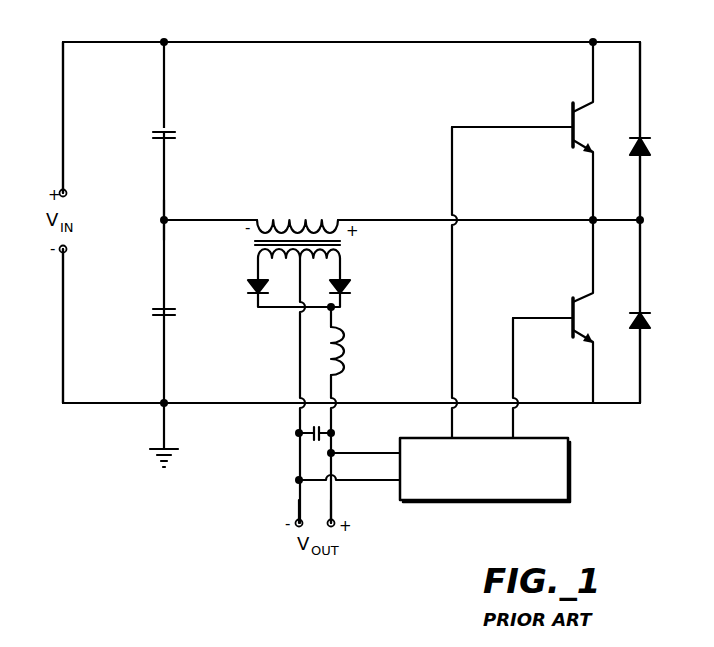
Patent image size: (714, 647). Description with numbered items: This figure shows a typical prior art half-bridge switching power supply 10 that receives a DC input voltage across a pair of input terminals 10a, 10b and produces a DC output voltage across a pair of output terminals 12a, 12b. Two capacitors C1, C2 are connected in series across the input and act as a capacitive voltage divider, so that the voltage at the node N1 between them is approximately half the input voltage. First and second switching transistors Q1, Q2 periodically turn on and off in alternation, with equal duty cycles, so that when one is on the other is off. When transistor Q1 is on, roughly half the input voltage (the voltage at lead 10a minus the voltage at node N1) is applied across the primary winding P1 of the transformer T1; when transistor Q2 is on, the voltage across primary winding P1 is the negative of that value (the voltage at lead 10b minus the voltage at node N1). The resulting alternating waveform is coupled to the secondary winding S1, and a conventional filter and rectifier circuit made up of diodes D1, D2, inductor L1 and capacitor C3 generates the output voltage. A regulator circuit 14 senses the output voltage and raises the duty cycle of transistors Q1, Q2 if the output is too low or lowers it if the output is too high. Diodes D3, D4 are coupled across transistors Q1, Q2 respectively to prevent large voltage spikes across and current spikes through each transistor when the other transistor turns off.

The prior art power converter 10 is at (379, 18).
The input terminal 10a is at (64, 114).
The input terminal 10b is at (64, 354).
The capacitor C1 is at (167, 130).
The capacitor C2 is at (170, 318).
The node N1 is at (166, 216).
The transformer T1 is at (303, 233).
The primary winding P1 is at (312, 226).
The secondary winding S1 is at (262, 259).
The diode D1 is at (253, 288).
The diode D2 is at (347, 297).
The inductor L1 is at (348, 347).
The capacitor C3 is at (313, 430).
The output terminal 12a is at (332, 516).
The output terminal 12b is at (298, 516).
The first switching transistor Q1 is at (572, 111).
The second switching transistor Q2 is at (572, 301).
The diode D3 is at (652, 147).
The diode D4 is at (652, 321).
The regulator circuit 14 is at (532, 437).